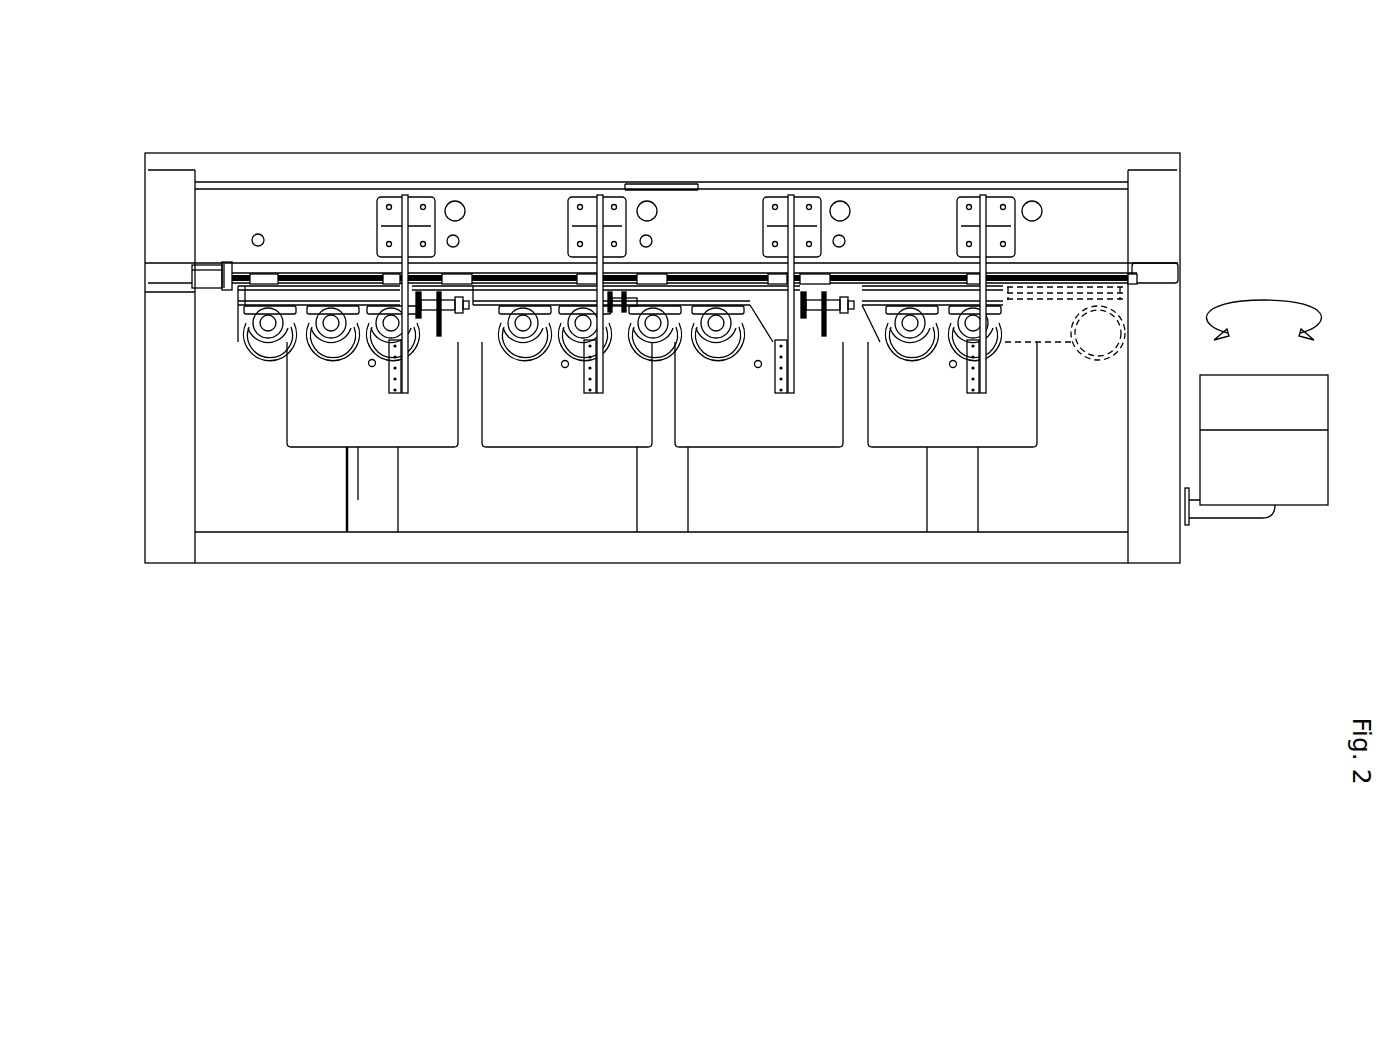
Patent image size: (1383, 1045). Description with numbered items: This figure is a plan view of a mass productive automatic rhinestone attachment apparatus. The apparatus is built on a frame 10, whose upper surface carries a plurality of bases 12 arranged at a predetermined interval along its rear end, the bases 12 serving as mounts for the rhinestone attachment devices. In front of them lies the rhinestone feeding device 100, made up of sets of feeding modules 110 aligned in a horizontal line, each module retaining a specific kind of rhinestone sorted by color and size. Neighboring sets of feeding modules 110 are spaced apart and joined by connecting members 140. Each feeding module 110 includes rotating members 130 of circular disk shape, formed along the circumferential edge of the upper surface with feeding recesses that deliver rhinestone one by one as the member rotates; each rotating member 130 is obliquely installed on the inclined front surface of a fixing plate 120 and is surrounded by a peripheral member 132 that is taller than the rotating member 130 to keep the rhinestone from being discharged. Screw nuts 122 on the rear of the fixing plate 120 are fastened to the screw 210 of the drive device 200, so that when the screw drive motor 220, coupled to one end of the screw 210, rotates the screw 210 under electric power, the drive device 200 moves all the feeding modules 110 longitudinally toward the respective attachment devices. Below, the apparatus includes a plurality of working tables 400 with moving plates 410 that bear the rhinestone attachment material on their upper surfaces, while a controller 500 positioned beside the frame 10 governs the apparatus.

The frame 10 is at (1158, 302).
The base 12 is at (407, 383).
The rhinestone feeding device 100 is at (263, 278).
The feeding module 110 is at (262, 367).
The fixing plate 120 is at (333, 304).
The screw nut 122 is at (267, 273).
The rotating member 130 is at (253, 333).
The peripheral member 132 is at (258, 358).
The connecting member 140 is at (423, 297).
The drive device 200 is at (154, 238).
The screw 210 is at (243, 275).
The screw drive motor 220 is at (205, 275).
The working table 400 is at (313, 458).
The moving plate 410 is at (352, 437).
The controller 500 is at (1292, 518).